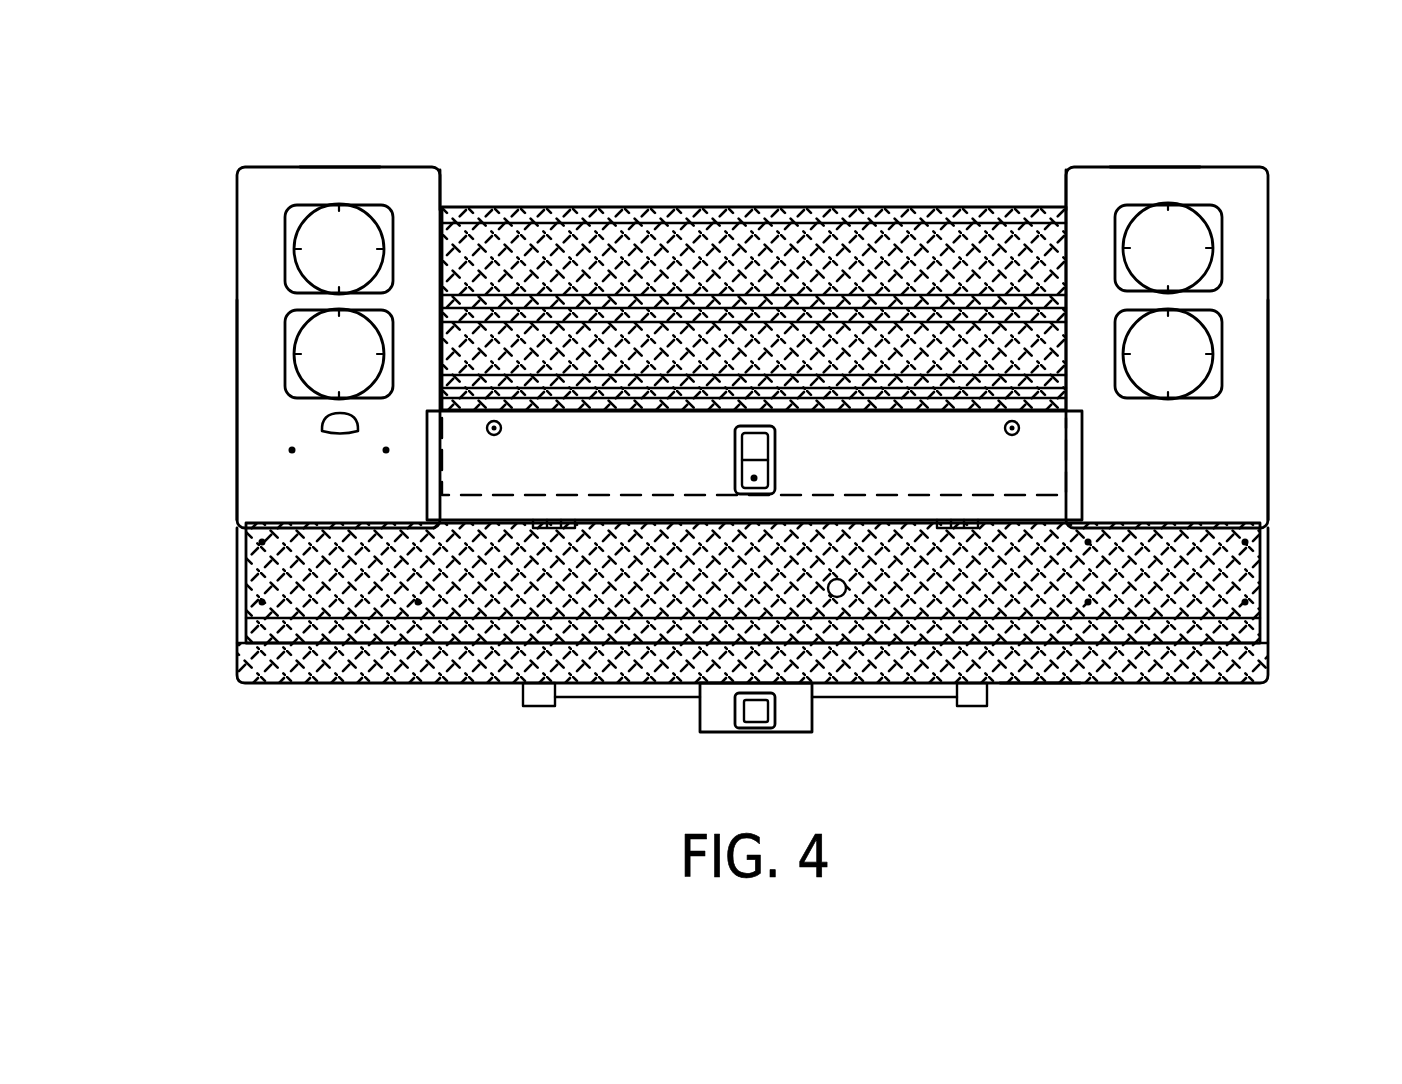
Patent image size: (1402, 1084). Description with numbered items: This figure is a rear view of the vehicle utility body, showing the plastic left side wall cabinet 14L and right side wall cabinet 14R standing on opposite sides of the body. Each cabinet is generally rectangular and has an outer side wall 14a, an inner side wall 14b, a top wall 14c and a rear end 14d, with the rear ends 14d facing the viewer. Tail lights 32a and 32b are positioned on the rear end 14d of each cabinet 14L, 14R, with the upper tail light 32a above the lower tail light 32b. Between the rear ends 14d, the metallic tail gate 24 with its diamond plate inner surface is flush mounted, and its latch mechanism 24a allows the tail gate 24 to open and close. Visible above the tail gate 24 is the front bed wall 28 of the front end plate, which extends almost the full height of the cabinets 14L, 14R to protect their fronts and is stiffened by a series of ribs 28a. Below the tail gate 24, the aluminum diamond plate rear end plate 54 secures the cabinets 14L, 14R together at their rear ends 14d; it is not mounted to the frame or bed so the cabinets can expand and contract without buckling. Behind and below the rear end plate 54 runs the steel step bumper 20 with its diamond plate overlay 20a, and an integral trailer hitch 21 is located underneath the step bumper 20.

The left side wall cabinet 14L is at (252, 207).
The right side wall cabinet 14R is at (1233, 180).
The outer side wall 14a is at (222, 423).
The inner side wall 14b is at (458, 189).
The top wall 14c is at (332, 150).
The rear end 14d is at (372, 502).
The step bumper 20 is at (1165, 683).
The diamond plate overlay 20a is at (1040, 683).
The trailer hitch 21 is at (785, 712).
The tail gate 24 is at (635, 470).
The latch mechanism 24a is at (776, 452).
The front bed wall 28 is at (806, 207).
The ribs 28a is at (652, 302).
The tail light 32a is at (1197, 241).
The tail light 32b is at (1190, 347).
The rear end plate 54 is at (1217, 587).